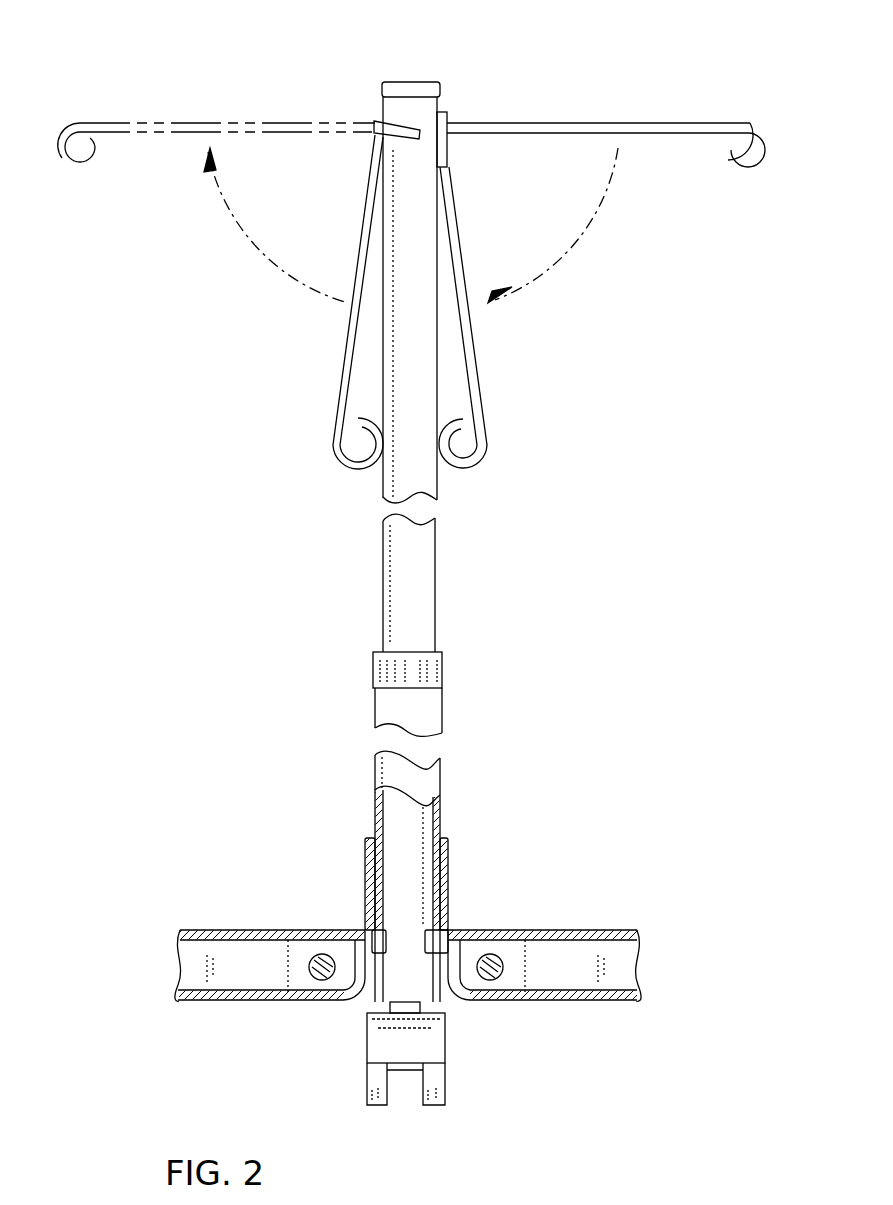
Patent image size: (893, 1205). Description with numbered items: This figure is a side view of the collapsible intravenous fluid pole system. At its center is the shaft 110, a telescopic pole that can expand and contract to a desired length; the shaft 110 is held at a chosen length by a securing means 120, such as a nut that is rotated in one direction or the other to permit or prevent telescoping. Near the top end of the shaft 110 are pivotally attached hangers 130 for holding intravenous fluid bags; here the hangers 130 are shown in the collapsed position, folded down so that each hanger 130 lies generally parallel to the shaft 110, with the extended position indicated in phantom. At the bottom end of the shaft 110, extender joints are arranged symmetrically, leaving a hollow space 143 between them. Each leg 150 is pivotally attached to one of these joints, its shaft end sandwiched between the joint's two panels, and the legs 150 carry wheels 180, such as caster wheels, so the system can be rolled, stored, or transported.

The shaft 110 is at (383, 568).
The securing means 120 is at (375, 676).
The hanger 130 is at (500, 123).
The hollow space 143 is at (407, 977).
The leg 150 is at (250, 932).
The wheel 180 is at (447, 1068).